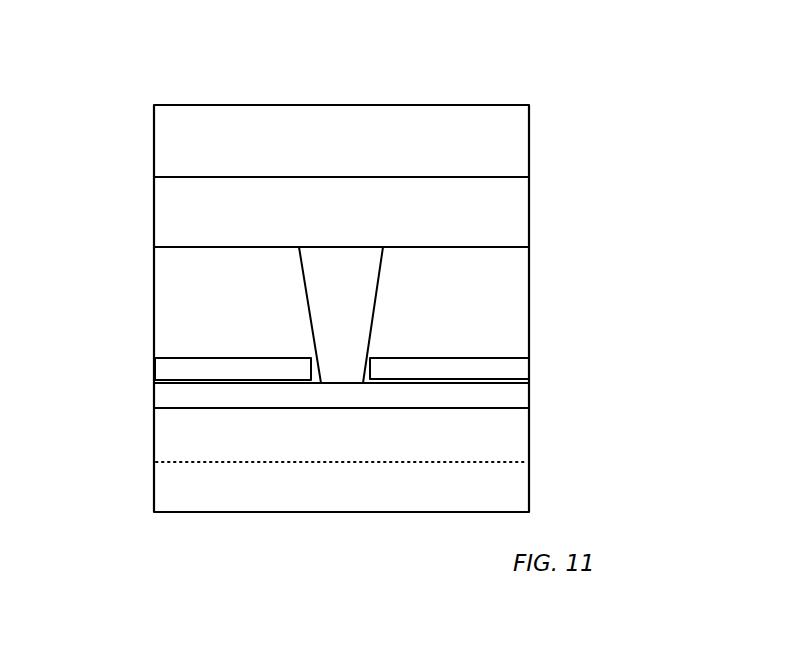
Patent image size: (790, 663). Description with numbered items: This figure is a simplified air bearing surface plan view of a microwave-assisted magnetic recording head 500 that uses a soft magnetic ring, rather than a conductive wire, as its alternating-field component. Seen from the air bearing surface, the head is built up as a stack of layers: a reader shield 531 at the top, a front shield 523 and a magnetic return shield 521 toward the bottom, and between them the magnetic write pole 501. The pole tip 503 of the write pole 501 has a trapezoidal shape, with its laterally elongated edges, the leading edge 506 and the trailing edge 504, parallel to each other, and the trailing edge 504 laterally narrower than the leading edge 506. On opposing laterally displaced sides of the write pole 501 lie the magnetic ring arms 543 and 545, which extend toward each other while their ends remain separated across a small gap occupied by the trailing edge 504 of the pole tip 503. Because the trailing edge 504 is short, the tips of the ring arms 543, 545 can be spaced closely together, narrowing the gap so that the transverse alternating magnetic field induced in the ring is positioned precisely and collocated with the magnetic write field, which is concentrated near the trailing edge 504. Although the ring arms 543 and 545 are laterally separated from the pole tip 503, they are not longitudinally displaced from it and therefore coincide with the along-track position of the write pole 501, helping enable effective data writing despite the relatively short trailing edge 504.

The microwave-assisted magnetic recording head 500 is at (76, 80).
The write pole 501 is at (531, 311).
The pole tip 503 is at (376, 298).
The trailing edge 504 is at (346, 385).
The leading edge 506 is at (335, 247).
The magnetic return shield 521 is at (531, 478).
The front shield 523 is at (531, 435).
The reader shield 531 is at (532, 160).
The magnetic ring arm 543 is at (195, 357).
The magnetic ring arm 545 is at (457, 358).